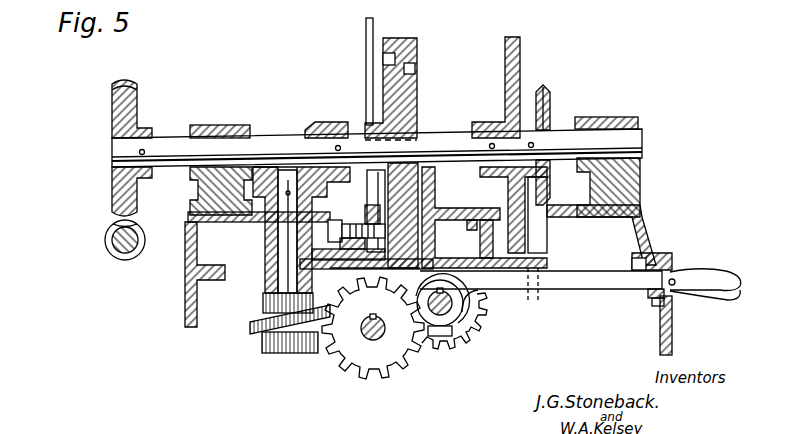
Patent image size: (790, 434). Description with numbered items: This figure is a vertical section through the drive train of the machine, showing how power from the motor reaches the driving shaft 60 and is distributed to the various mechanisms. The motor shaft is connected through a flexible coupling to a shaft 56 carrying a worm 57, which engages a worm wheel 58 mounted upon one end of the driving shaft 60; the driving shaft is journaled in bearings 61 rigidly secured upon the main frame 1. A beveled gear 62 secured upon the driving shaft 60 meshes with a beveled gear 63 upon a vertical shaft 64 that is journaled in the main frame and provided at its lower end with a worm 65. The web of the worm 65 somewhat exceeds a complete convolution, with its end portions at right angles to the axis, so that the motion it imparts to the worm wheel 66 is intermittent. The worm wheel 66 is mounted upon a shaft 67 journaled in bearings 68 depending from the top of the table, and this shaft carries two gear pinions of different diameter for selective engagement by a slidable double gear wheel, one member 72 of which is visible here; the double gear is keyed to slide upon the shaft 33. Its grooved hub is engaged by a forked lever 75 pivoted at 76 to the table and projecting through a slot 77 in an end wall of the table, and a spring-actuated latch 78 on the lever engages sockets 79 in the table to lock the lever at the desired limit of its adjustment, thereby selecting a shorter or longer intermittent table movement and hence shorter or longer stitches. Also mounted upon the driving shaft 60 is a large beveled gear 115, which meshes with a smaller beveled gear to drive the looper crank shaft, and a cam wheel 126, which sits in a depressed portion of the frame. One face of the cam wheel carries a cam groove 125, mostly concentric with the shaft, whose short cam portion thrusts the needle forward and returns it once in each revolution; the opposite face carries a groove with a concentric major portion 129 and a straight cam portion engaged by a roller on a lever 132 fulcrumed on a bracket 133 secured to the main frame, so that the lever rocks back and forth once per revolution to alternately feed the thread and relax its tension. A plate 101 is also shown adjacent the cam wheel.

The frame 1 is at (674, 343).
The shaft 33 is at (450, 318).
The shaft 56 is at (114, 250).
The worm 57 is at (105, 238).
The worm wheel 58 is at (111, 97).
The driving shaft 60 is at (111, 152).
The bearings 61 is at (213, 125).
The beveled gear 62 is at (322, 122).
The beveled gear 63 is at (262, 176).
The vertical shaft 64 is at (285, 277).
The worm 65 is at (257, 327).
The worm wheel 66 is at (348, 282).
The shaft 67 is at (378, 337).
The bearings 68 is at (353, 283).
The member of double gear wheel 72 is at (468, 336).
The forked lever 75 is at (728, 280).
The pivot 76 is at (540, 297).
The slot 77 is at (657, 300).
The spring-actuated latch 78 is at (652, 294).
The sockets 79 is at (668, 257).
The plate 101 is at (522, 64).
The large beveled gear 115 is at (549, 97).
The cam groove 125 is at (383, 60).
The cam wheel 126 is at (403, 38).
The major portion of cam groove 129 is at (417, 68).
The lever 132 is at (366, 33).
The bracket 133 is at (356, 222).